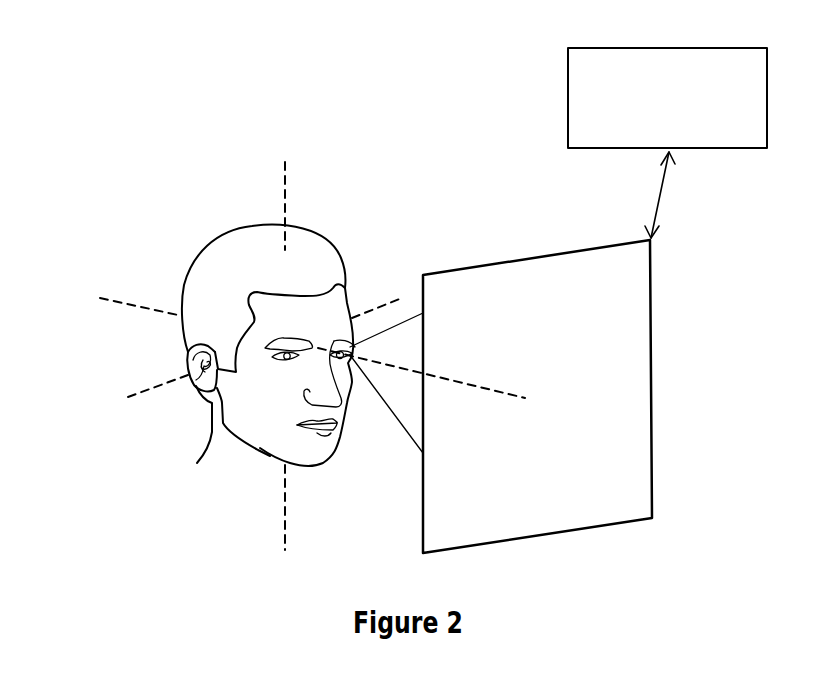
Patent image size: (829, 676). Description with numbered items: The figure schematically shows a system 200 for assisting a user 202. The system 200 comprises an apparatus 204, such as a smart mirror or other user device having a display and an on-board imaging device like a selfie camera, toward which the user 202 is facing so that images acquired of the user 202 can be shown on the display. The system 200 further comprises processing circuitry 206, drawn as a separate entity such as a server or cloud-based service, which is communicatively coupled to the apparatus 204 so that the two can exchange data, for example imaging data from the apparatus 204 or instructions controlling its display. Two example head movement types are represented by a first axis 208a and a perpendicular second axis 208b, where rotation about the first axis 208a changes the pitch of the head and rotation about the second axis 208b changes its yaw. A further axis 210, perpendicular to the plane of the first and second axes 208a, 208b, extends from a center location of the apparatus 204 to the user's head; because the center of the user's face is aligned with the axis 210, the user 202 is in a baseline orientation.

The system 200 is at (98, 60).
The user 202 is at (218, 245).
The apparatus 204 is at (560, 305).
The processing circuitry 206 is at (687, 113).
The first axis 208a is at (131, 394).
The second axis 208b is at (283, 343).
The further axis 210 is at (120, 300).